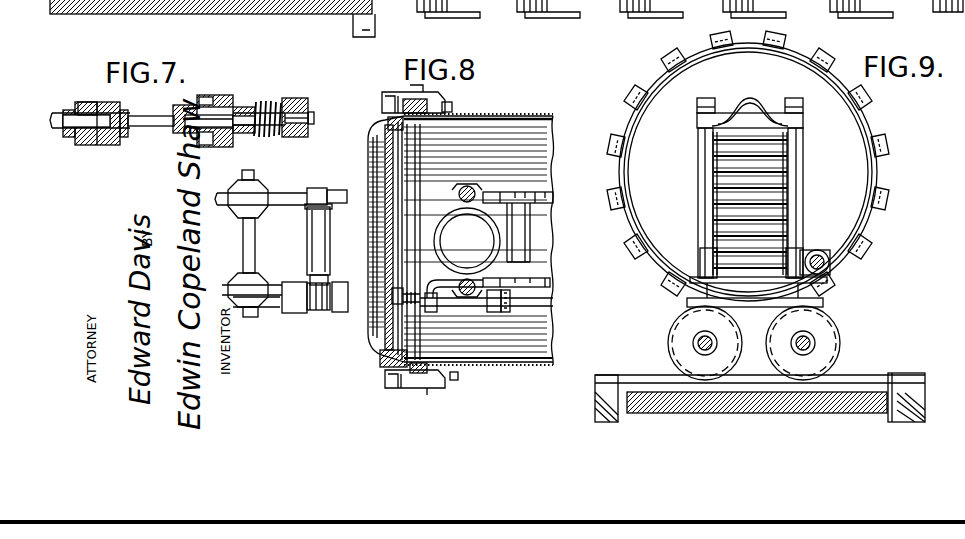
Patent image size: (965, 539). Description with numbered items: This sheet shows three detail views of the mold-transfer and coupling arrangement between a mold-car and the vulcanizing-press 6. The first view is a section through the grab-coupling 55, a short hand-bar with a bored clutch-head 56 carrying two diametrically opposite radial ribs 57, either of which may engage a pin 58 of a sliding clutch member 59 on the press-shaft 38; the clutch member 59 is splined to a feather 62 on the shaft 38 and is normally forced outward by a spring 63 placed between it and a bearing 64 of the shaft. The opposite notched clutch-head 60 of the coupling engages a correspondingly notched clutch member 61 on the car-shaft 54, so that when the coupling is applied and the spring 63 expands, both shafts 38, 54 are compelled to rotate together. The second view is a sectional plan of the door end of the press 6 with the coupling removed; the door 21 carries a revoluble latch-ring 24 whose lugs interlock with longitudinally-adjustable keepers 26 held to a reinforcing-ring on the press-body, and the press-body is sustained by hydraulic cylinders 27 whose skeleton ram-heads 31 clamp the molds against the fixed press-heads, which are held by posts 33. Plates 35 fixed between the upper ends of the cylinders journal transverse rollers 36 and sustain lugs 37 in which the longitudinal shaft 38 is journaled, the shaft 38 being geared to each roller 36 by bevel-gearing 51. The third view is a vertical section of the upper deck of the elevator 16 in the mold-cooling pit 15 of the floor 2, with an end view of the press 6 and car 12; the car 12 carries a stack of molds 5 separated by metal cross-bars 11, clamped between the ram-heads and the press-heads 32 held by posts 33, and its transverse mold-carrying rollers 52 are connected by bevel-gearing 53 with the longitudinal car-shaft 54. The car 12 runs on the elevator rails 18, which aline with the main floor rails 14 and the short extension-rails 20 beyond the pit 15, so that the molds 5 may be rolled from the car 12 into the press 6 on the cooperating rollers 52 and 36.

In FIG. 9, the floor 2 is at (594, 413).
In FIG. 9, the molds 5 is at (777, 187).
In FIG. 8, the vulcanizing-press 6 is at (513, 116).
In FIG. 9, the vulcanizing-press 6 is at (877, 182).
In FIG. 9, the metal cross-bars 11 is at (715, 180).
In FIG. 7, the car 12 is at (281, 243).
In FIG. 9, the car 12 is at (702, 260).
In FIG. 9, the rails 14 is at (607, 380).
In FIG. 8, the mold-cooling pit 15 is at (378, 17).
In FIG. 9, the mold-cooling pit 15 is at (628, 380).
In FIG. 9, the elevator 16 is at (863, 397).
In FIG. 9, the rails 18 is at (673, 387).
In FIG. 9, the short extension-rails 20 is at (908, 380).
In FIG. 8, the door 21 is at (370, 180).
In FIG. 8, the revoluble latch-ring 24 is at (387, 392).
In FIG. 8, the longitudinally-adjustable keepers 26 is at (398, 100).
In FIG. 9, the longitudinally-adjustable keepers 26 is at (660, 60).
In FIG. 8, the cylinders 27 is at (633, 10).
In FIG. 8, the ram-heads 31 is at (445, 232).
In FIG. 9, the press-heads 32 is at (747, 113).
In FIG. 8, the posts 33 is at (461, 188).
In FIG. 9, the posts 33 is at (700, 155).
In FIG. 8, the plates 35 is at (512, 192).
In FIG. 8, the rollers 36 is at (517, 237).
In FIG. 8, the lugs 37 is at (498, 312).
In FIG. 7, the shaft 38 is at (308, 118).
In FIG. 8, the shaft 38 is at (448, 306).
In FIG. 8, the bevel-gearing 51 is at (512, 308).
In FIG. 7, the mold-carrying rollers 52 is at (317, 220).
In FIG. 9, the mold-carrying rollers 52 is at (755, 289).
In FIG. 7, the bevel-gearing 53 is at (308, 315).
In FIG. 7, the car-shaft 54 is at (62, 137).
In FIG. 9, the car-shaft 54 is at (830, 263).
In FIG. 7, the grab-coupling 55 is at (151, 138).
In FIG. 7, the bored clutch-head 56 is at (182, 133).
In FIG. 7, the radial ribs 57 is at (200, 95).
In FIG. 7, the pin 58 is at (214, 97).
In FIG. 7, the sliding clutch member 59 is at (248, 104).
In FIG. 8, the sliding clutch member 59 is at (400, 290).
In FIG. 7, the notched clutch-head 60 is at (112, 145).
In FIG. 7, the clutch member 61 is at (80, 102).
In FIG. 7, the feather 62 is at (236, 133).
In FIG. 7, the spring 63 is at (268, 133).
In FIG. 7, the bearing 64 is at (301, 99).
In FIG. 8, the bearing 64 is at (422, 312).